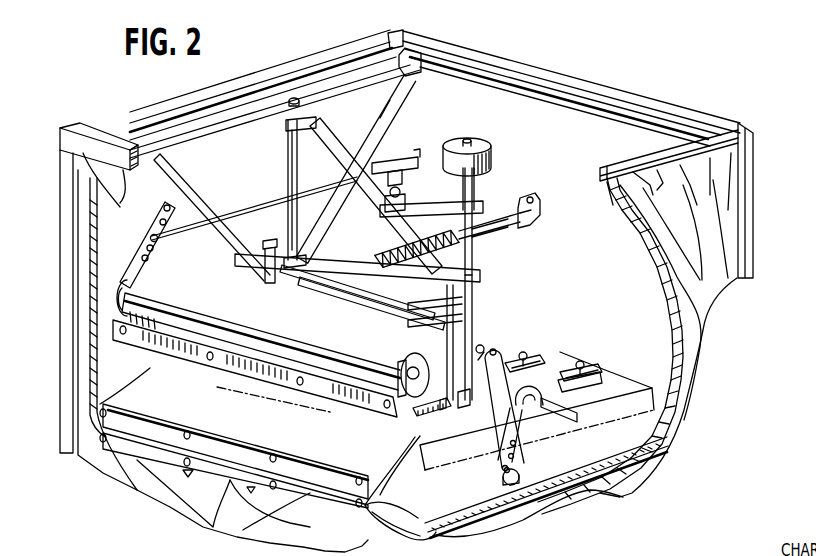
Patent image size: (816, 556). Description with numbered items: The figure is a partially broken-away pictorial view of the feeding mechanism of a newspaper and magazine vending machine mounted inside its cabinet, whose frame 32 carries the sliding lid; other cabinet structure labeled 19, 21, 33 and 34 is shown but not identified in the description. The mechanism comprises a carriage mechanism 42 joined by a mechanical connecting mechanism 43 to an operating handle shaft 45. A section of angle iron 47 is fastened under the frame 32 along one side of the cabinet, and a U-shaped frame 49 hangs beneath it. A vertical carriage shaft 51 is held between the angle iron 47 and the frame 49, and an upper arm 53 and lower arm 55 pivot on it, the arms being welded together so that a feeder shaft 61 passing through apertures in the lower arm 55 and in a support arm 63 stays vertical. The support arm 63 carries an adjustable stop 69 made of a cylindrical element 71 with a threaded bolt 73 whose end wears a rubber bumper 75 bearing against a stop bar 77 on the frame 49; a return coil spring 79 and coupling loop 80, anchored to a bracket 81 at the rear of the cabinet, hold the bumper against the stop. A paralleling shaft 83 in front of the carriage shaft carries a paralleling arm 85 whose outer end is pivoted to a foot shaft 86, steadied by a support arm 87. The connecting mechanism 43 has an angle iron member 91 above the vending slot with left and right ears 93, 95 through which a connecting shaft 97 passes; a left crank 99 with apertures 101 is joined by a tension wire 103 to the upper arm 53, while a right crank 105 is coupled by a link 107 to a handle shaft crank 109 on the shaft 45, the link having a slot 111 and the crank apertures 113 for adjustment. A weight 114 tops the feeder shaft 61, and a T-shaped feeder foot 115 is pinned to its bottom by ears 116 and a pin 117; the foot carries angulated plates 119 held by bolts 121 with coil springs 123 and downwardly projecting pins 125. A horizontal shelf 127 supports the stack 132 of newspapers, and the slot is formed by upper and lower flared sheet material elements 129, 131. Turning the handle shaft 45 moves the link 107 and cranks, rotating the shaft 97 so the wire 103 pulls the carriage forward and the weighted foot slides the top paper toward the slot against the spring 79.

The right frame post 19 is at (754, 172).
The housing 21 is at (722, 290).
The frame 32 is at (607, 116).
The left frame post 33 is at (82, 130).
The top frame rail 34 is at (686, 106).
The carriage mechanism 42 is at (333, 284).
The mechanical connecting mechanism 43 is at (261, 340).
The operating handle shaft 45 is at (570, 423).
The section of angle iron 47 is at (439, 67).
The U-shaped frame 49 is at (228, 242).
The carriage shaft 51 is at (298, 169).
The upper arm 53 is at (336, 140).
The lower arm 55 is at (340, 262).
The feeder shaft 61 is at (474, 258).
The support arm 63 is at (480, 198).
The adjustable stop 69 is at (409, 136).
The cylindrical element 71 is at (403, 213).
The threaded bolt 73 is at (410, 192).
The rubber bumper 75 is at (405, 182).
The stop bar 77 is at (404, 163).
The return coil spring 79 is at (385, 250).
The coupling loop 80 is at (500, 230).
The bracket 81 is at (536, 198).
The paralleling shaft 83 is at (266, 244).
The paralleling arm 85 is at (342, 296).
The foot shaft 86 is at (450, 330).
The support arm 87 is at (394, 306).
The angle iron member 91 is at (255, 368).
The left ear 93 is at (133, 294).
The right ear 95 is at (404, 362).
The connecting shaft 97 is at (190, 313).
The left crank 99 is at (150, 239).
The apertures 101 is at (170, 212).
The tension wire 103 is at (268, 204).
The right crank 105 is at (480, 344).
The link 107 is at (494, 342).
The handle shaft crank 109 is at (501, 479).
The slot 111 is at (513, 470).
The apertures 113 is at (516, 444).
The weight 114 is at (481, 146).
The feeder foot 115 is at (425, 411).
The ears 116 is at (443, 410).
The pin 117 is at (465, 410).
The angulated plates 119 is at (519, 356).
The bolts 121 is at (526, 352).
The coil springs 123 is at (528, 362).
The pins 125 is at (560, 397).
The horizontal shelf 127 is at (641, 438).
The upper sheet material element 129 is at (300, 434).
The lower sheet material element 131 is at (392, 500).
The stack 132 is at (625, 387).